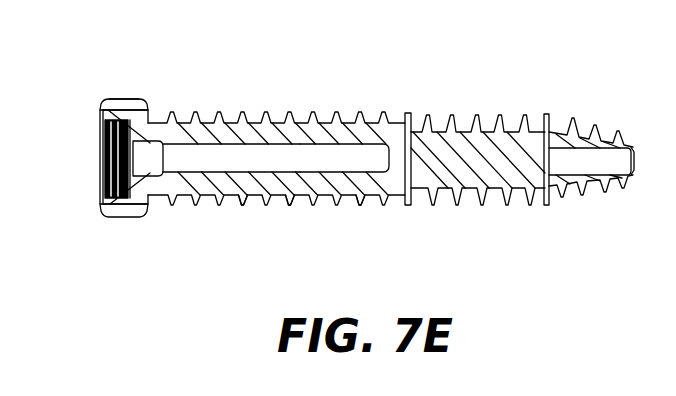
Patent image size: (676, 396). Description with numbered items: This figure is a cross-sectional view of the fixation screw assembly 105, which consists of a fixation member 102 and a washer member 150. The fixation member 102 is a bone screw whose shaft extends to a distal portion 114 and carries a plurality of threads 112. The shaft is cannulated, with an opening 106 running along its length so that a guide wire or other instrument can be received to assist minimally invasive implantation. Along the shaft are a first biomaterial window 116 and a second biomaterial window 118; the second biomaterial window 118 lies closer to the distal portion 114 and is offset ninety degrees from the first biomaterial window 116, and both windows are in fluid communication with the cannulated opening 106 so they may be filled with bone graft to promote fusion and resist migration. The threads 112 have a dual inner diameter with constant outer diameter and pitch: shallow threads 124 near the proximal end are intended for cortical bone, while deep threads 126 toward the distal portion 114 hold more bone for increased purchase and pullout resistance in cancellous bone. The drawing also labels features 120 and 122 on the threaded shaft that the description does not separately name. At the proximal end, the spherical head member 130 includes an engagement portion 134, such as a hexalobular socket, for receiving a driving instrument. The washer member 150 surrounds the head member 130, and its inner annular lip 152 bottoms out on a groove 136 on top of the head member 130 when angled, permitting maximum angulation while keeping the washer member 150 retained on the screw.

The fixation screw assembly 105 is at (527, 53).
The fixation member 102 is at (383, 126).
The opening 106 is at (215, 155).
The threads 112 is at (292, 118).
The distal portion 114 is at (600, 138).
The first biomaterial window 116 is at (315, 150).
The second biomaterial window 118 is at (497, 188).
The thread 120 is at (253, 194).
The shoulder 122 is at (398, 194).
The shallow threads 124 is at (288, 204).
The deep threads 126 is at (358, 201).
The head member 130 is at (133, 218).
The engagement portion 134 is at (105, 149).
The groove 136 is at (107, 100).
The washer member 150 is at (119, 99).
The inner annular lip 152 is at (101, 112).